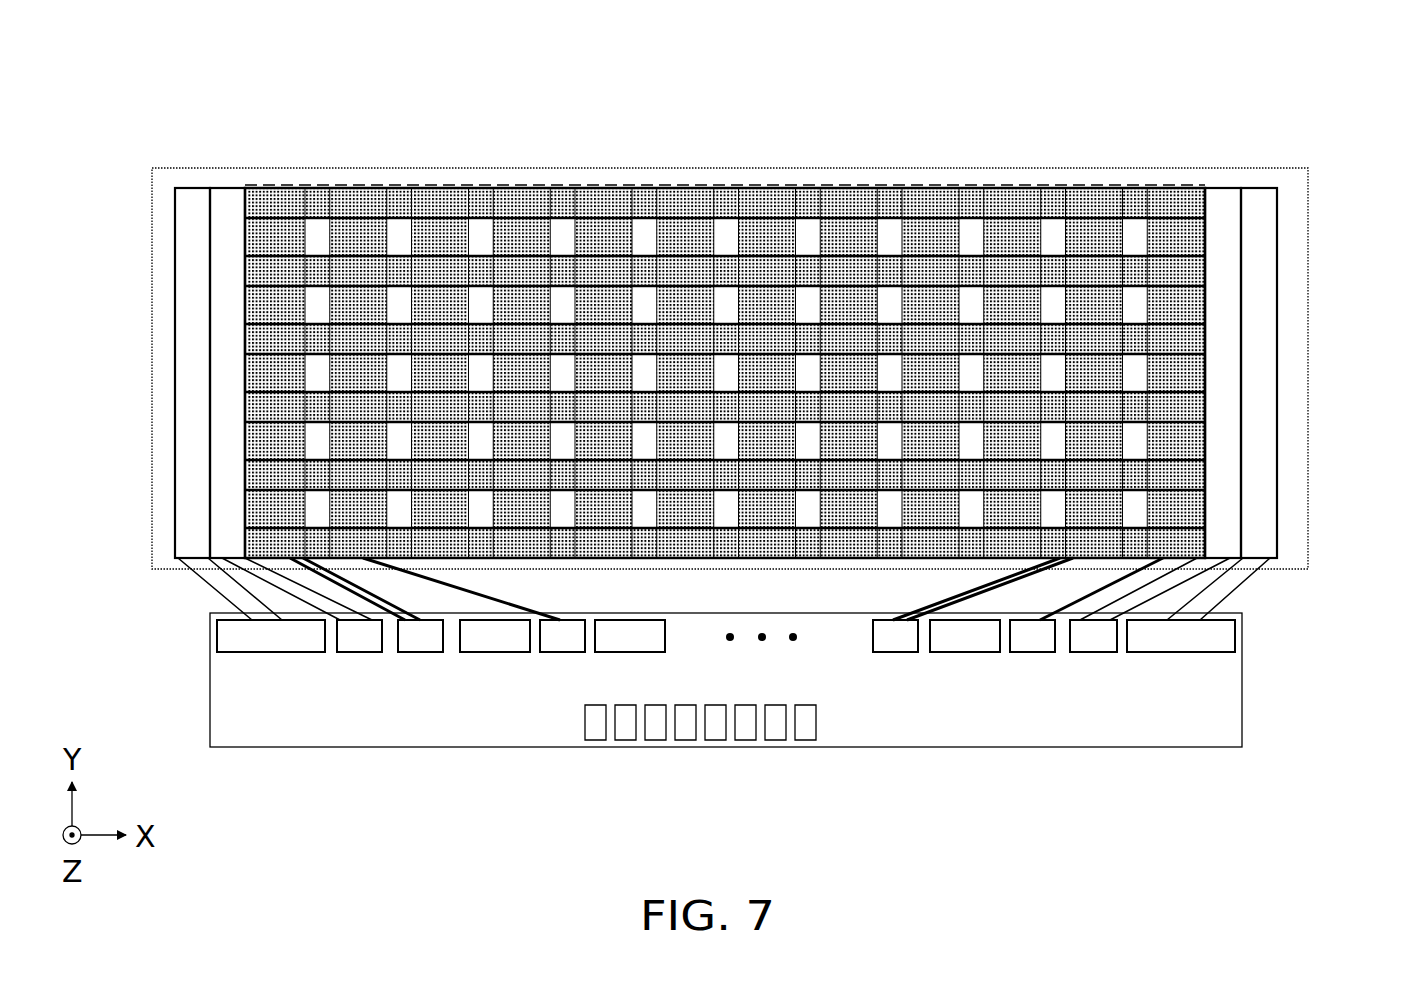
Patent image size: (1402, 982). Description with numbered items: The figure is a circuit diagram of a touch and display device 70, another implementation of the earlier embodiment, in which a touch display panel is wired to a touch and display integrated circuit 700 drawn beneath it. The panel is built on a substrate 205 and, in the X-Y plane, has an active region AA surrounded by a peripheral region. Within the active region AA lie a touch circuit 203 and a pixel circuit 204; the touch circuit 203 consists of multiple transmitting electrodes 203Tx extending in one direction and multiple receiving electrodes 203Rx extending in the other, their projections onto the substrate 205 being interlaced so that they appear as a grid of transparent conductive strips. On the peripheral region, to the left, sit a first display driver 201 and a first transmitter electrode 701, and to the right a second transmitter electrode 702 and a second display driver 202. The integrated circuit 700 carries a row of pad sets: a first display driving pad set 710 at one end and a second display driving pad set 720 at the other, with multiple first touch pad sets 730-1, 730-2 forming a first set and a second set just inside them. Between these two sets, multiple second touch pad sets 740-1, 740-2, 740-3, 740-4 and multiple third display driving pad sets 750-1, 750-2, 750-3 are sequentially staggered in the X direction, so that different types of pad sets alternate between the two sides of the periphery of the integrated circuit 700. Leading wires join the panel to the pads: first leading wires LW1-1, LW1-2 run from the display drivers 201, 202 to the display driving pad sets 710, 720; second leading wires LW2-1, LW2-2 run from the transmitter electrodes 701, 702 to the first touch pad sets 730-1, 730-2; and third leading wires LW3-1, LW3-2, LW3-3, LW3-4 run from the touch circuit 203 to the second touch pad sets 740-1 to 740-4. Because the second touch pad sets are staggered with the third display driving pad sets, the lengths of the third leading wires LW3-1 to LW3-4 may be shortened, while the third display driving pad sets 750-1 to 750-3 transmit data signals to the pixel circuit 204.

The substrate 205 is at (152, 170).
The first display driver 201 is at (193, 205).
The first transmitter electrode 701 is at (228, 205).
The second transmitter electrode 702 is at (1220, 205).
The second display driver 202 is at (1258, 205).
The active region AA is at (725, 310).
The touch circuit 203 is at (726, 310).
The transmitting electrodes 203Tx is at (280, 240).
The receiving electrodes 203Rx is at (404, 210).
The pixel circuit 204 is at (1036, 186).
The touch and display integrated circuit 700 is at (210, 677).
The first display driving pad set 710 is at (270, 653).
The second display driving pad set 720 is at (1185, 653).
The first touch pad set 730-1 is at (360, 653).
The first touch pad set 730-2 is at (1078, 653).
The second touch pad set 740-1 is at (420, 653).
The second touch pad set 740-2 is at (560, 653).
The second touch pad set 740-3 is at (900, 653).
The second touch pad set 740-4 is at (1035, 653).
The third display driving pad set 750-1 is at (495, 653).
The third display driving pad set 750-2 is at (650, 653).
The third display driving pad set 750-3 is at (955, 653).
The first leading wire LW1-1 is at (195, 572).
The first leading wire LW1-2 is at (1240, 582).
The second leading wire LW2-1 is at (333, 615).
The second leading wire LW2-2 is at (1120, 616).
The third leading wire LW3-1 is at (293, 585).
The third leading wire LW3-2 is at (490, 597).
The third leading wire LW3-3 is at (966, 597).
The third leading wire LW3-4 is at (1205, 594).
The touch and display device 70 is at (1342, 865).